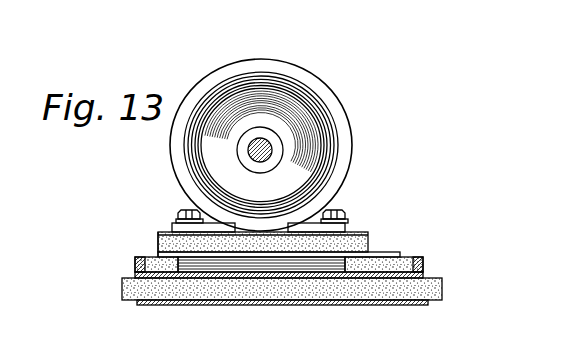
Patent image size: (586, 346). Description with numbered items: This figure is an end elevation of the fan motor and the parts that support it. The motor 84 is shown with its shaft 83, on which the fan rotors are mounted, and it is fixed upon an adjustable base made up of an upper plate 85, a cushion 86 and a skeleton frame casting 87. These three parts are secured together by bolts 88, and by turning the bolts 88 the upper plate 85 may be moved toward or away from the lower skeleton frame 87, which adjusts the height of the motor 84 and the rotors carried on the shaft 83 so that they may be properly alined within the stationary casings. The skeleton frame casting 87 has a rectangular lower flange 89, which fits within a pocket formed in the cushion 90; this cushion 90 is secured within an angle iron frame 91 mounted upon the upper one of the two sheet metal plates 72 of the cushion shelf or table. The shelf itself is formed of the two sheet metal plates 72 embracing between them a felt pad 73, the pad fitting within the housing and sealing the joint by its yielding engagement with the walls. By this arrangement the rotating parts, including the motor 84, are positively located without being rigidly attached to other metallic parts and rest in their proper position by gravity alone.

The motor 84 is at (259, 82).
The shaft 83 is at (276, 134).
The bolts 88 is at (186, 206).
The upper plate 85 is at (346, 232).
The cushion 86 is at (368, 247).
The skeleton frame casting 87 is at (156, 251).
The rectangular lower flange 89 is at (182, 253).
The angle iron frame 91 is at (135, 261).
The cushion 90 is at (423, 257).
The sheet metal plates 72 is at (150, 303).
The felt pad 73 is at (122, 290).